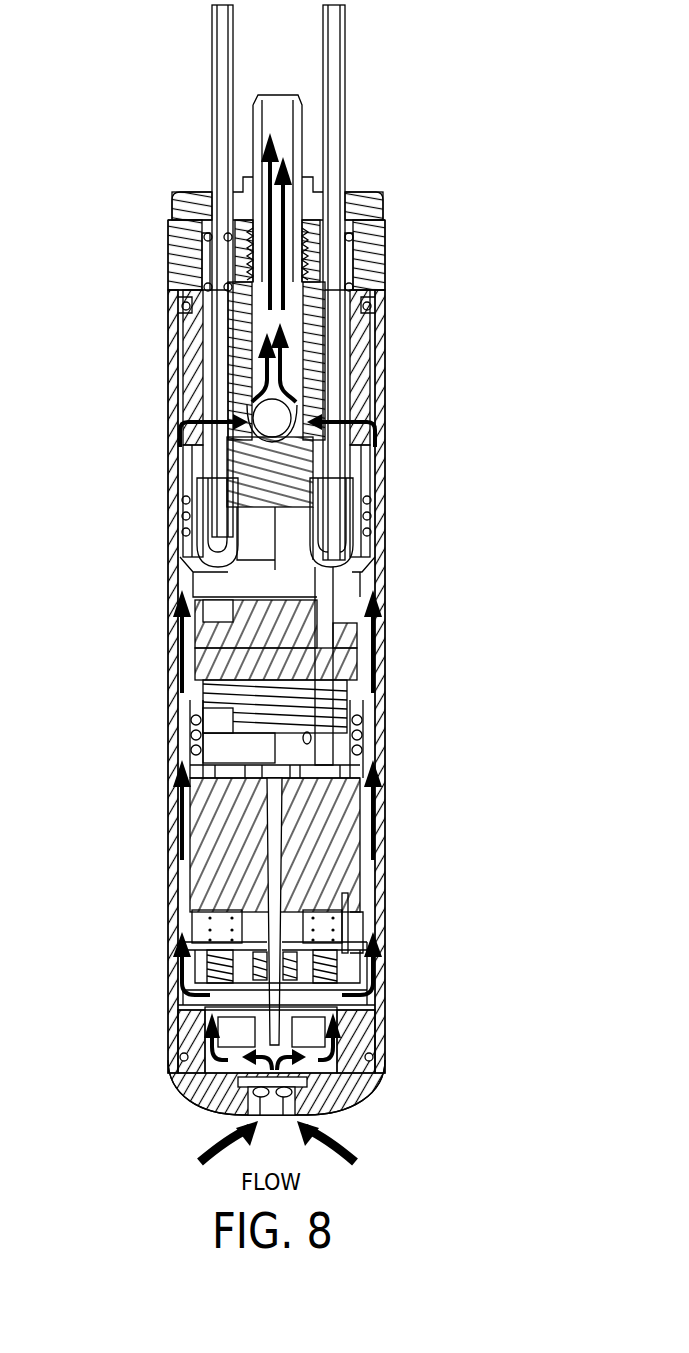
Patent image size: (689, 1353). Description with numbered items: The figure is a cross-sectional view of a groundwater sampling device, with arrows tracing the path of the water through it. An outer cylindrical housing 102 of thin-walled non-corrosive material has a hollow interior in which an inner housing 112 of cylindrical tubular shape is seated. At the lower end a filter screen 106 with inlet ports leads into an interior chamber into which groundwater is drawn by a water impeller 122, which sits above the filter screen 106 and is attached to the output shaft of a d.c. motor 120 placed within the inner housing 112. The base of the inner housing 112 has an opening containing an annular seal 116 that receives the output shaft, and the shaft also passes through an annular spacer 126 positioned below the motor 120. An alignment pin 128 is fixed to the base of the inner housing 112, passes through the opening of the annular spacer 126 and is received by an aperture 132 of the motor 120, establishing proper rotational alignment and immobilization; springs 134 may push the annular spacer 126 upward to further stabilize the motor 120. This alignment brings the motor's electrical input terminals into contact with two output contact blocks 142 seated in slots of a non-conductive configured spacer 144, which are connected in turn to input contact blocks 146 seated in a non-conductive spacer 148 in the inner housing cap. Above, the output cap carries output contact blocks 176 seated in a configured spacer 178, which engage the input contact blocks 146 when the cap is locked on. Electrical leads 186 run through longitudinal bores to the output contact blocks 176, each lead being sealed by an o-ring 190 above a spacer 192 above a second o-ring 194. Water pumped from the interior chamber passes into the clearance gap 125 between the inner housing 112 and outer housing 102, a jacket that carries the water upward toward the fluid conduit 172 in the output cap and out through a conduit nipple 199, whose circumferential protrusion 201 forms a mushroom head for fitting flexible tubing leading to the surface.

The outer cylindrical housing 102 is at (385, 667).
The filter screen 106 is at (250, 1118).
The inner housing 112 is at (385, 878).
The annular seal 116 is at (207, 971).
The d.c. motor 120 is at (195, 880).
The water impeller 122 is at (232, 1027).
The clearance gap 125 is at (312, 740).
The annular spacer 126 is at (195, 924).
The alignment pin 128 is at (349, 897).
The aperture 132 is at (352, 920).
The springs 134 is at (190, 943).
The output contact blocks 142 is at (363, 720).
The non-conductive configured spacer 144 is at (207, 695).
The input contact blocks 146 is at (335, 580).
The non-conductive spacer 148 is at (345, 633).
The fluid conduit 172 is at (292, 400).
The output contact blocks 176 is at (196, 535).
The configured spacer 178 is at (190, 463).
The electrical leads 186 is at (224, 70).
The o-ring 190 is at (172, 219).
The spacer 192 is at (168, 269).
The second o-ring 194 is at (172, 292).
The conduit nipple 199 is at (345, 120).
The circumferential protrusion 201 is at (300, 103).